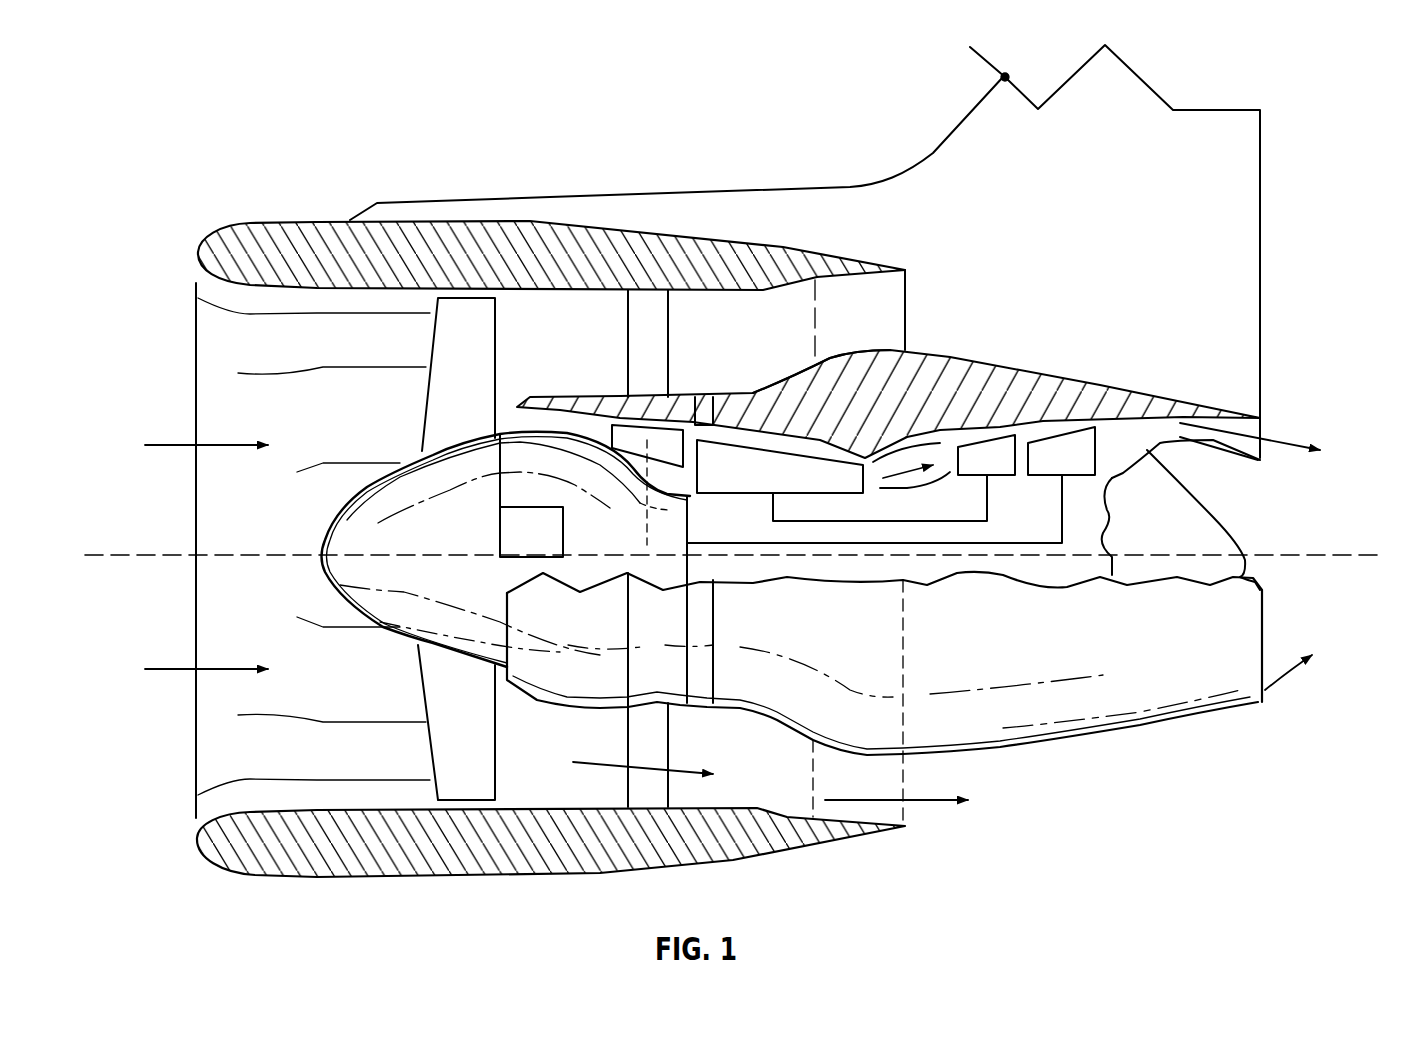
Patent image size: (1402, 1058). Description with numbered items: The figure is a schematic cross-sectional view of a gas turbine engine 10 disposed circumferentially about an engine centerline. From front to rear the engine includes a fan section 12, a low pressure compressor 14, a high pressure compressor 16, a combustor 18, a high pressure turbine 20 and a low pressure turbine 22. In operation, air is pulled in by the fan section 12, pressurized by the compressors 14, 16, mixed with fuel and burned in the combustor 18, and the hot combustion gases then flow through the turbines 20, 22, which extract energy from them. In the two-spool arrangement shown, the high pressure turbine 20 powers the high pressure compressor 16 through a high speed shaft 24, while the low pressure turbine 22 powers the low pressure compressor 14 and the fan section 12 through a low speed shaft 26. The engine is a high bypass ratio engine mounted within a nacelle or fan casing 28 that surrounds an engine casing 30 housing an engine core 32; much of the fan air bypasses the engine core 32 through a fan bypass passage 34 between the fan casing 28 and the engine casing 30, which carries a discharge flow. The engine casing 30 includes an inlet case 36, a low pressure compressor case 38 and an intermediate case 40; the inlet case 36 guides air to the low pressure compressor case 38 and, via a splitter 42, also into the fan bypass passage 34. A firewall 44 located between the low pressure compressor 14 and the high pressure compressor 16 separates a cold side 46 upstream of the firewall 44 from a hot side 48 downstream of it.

The gas turbine engine 10 is at (243, 194).
The fan section 12 is at (422, 711).
The low pressure compressor 14 is at (637, 457).
The high pressure compressor 16 is at (717, 483).
The combustor 18 is at (907, 490).
The high pressure turbine 20 is at (995, 462).
The low pressure turbine 22 is at (1083, 477).
The high speed shaft 24 is at (890, 523).
The low speed shaft 26 is at (817, 540).
The nacelle or fan casing 28 is at (340, 218).
The engine casing 30 is at (1077, 385).
The engine core 32 is at (943, 530).
The fan bypass passage 34 is at (750, 312).
The inlet case 36 is at (572, 668).
The low pressure compressor case 38 is at (668, 677).
The intermediate case 40 is at (700, 677).
The splitter 42 is at (530, 400).
The firewall 44 is at (703, 410).
The cold side 46 is at (648, 405).
The hot side 48 is at (765, 395).